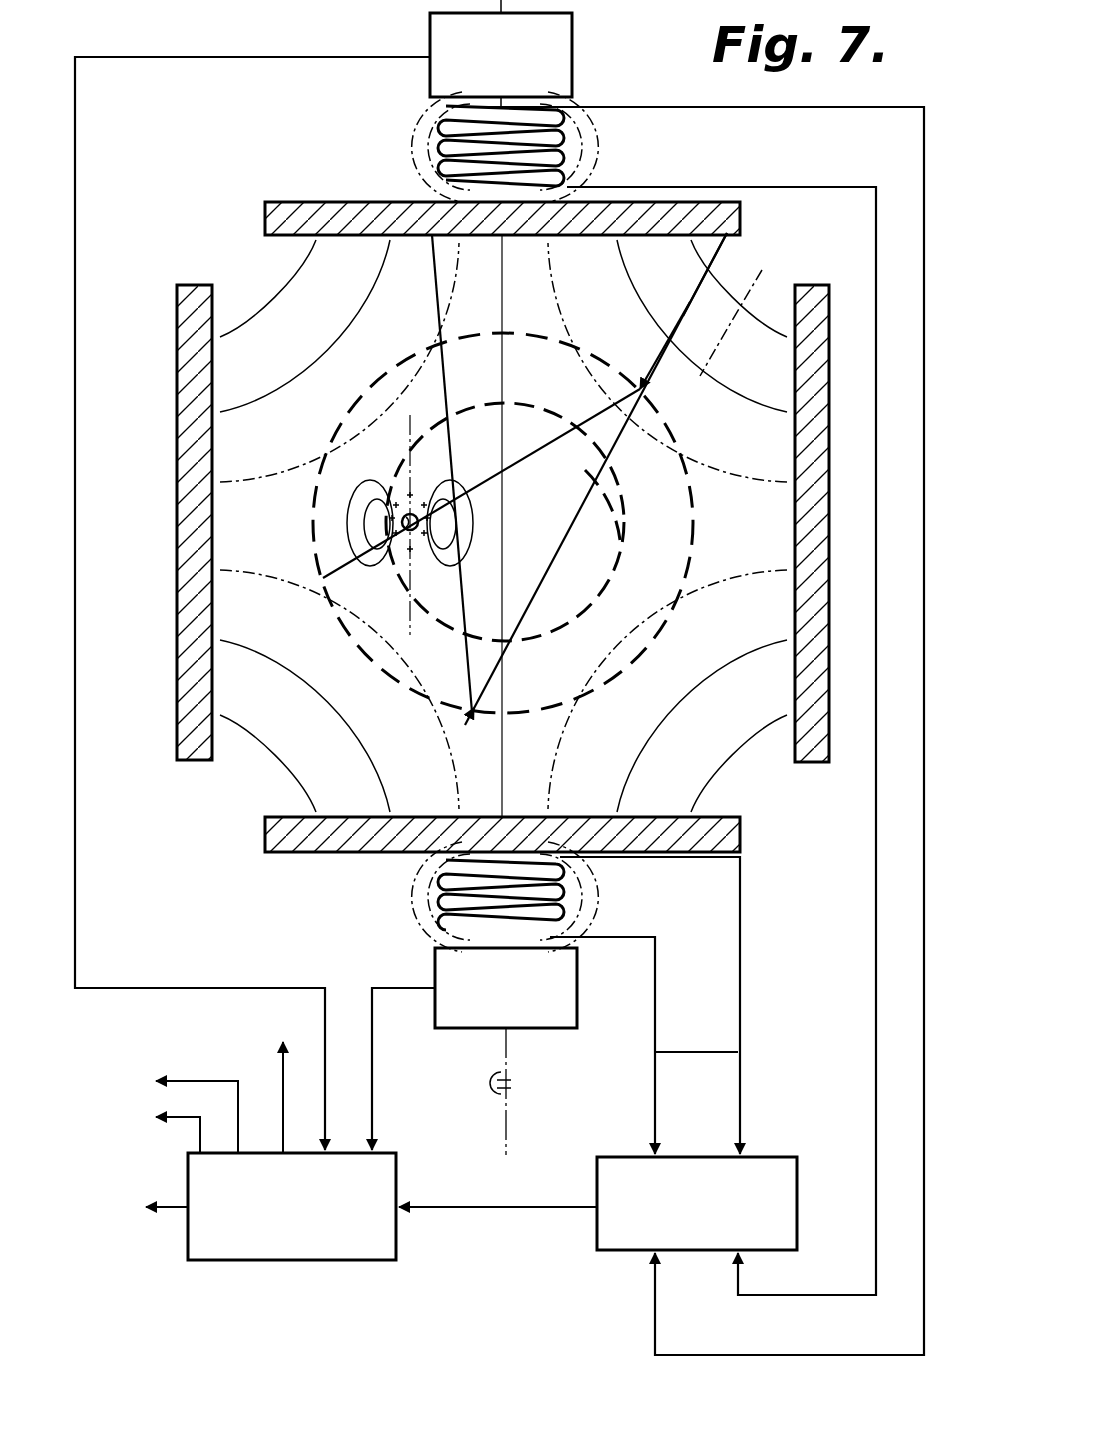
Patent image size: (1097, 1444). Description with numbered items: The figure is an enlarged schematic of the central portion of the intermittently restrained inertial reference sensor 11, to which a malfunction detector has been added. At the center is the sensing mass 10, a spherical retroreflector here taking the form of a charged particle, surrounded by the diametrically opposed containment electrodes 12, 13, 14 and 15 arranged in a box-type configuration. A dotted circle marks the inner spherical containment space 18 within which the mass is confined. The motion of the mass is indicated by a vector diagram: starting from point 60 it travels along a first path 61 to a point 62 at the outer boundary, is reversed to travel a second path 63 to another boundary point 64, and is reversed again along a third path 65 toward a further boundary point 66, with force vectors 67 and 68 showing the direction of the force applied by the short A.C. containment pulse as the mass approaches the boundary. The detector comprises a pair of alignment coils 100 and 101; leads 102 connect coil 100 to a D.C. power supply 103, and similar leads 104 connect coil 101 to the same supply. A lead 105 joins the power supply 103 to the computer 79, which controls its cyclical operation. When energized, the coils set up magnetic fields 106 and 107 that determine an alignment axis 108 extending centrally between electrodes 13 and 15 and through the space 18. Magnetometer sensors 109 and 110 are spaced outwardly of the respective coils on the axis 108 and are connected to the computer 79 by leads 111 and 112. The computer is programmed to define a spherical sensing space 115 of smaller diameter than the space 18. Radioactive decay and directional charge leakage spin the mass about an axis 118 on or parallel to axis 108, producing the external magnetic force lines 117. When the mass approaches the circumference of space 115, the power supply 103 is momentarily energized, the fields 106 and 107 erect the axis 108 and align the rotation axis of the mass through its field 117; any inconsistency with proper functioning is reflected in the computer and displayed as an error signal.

The sensing mass 10 is at (412, 548).
The intermittently restrained inertial reference sensor 11 is at (227, 230).
The containment electrode 12 is at (195, 357).
The containment electrode 13 is at (358, 215).
The containment electrode 14 is at (815, 720).
The containment electrode 15 is at (265, 835).
The inner spherical containment space 18 is at (400, 690).
The starting point 60 is at (440, 330).
The first path 61 is at (465, 380).
The boundary point 62 is at (440, 862).
The second path 63 is at (565, 595).
The boundary point 64 is at (762, 284).
The third path 65 is at (545, 452).
The boundary point 66 is at (345, 612).
The force vector 67 is at (472, 745).
The force vector 68 is at (683, 310).
The computer 79 is at (295, 1240).
The alignment coil 100 is at (600, 900).
The alignment coil 101 is at (440, 118).
The leads 102 is at (738, 1052).
The power supply 103 is at (622, 1240).
The leads 104 is at (924, 940).
The lead 105 is at (490, 1210).
The magnetic field 106 is at (400, 920).
The magnetic field 107 is at (615, 150).
The alignment axis 108 is at (510, 1138).
The magnetometer sensor 109 is at (560, 1018).
The magnetometer sensor 110 is at (572, 55).
The lead 111 is at (372, 1090).
The lead 112 is at (257, 57).
The spherical sensing space 115 is at (625, 530).
The magnetic force lines 117 is at (380, 525).
The axis 118 is at (405, 437).